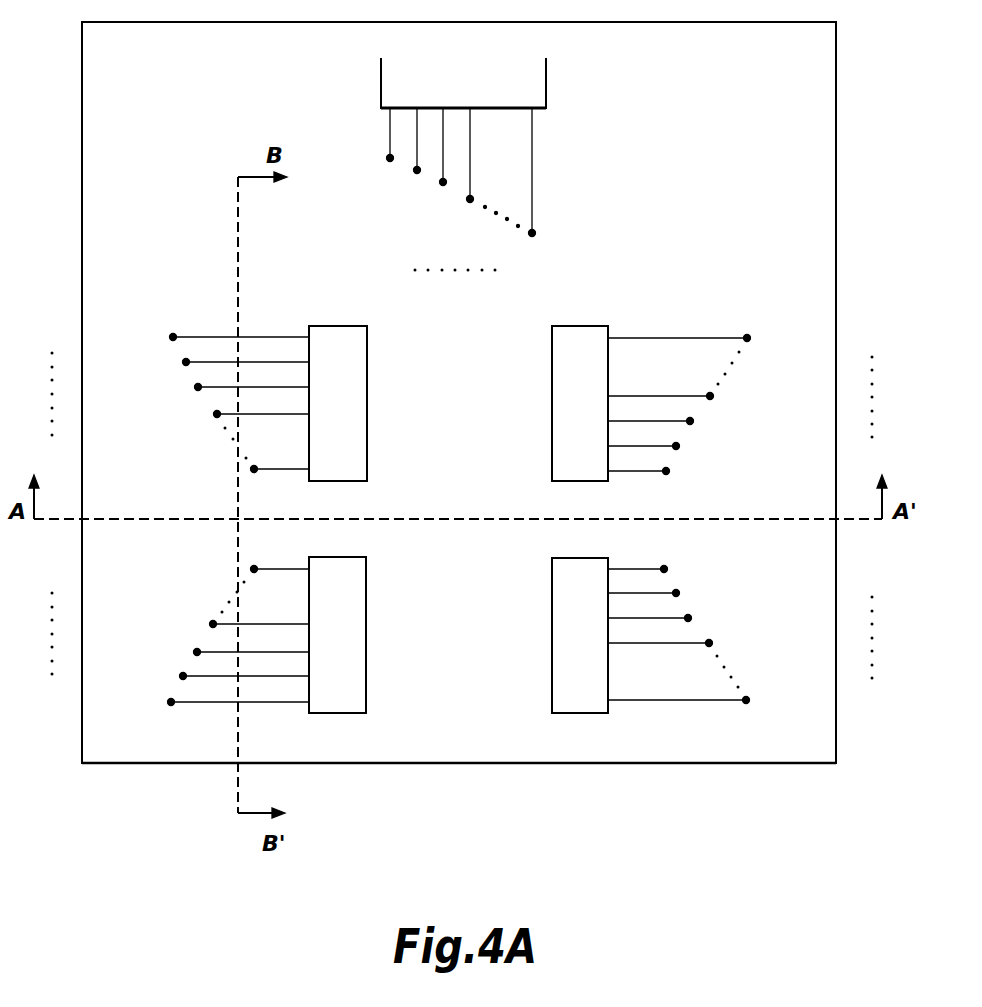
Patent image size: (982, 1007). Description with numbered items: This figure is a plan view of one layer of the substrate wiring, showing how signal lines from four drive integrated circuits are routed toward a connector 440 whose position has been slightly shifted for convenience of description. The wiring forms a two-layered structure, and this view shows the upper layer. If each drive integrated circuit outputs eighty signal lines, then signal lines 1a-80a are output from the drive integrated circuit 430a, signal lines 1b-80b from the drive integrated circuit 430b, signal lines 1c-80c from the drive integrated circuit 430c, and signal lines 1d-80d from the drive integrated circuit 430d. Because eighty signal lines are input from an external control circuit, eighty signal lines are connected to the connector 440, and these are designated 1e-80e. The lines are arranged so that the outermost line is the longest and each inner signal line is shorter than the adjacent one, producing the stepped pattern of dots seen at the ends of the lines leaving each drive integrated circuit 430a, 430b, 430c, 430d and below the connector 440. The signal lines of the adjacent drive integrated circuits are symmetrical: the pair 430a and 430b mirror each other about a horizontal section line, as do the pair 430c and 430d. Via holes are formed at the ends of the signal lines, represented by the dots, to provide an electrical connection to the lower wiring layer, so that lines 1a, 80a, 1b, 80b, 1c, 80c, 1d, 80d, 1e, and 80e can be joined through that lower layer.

The connector 440 is at (546, 84).
The signal line 80e is at (390, 158).
The signal line 1e is at (532, 233).
The drive integrated circuit 430a is at (357, 359).
The drive integrated circuit 430b is at (356, 590).
The drive integrated circuit 430c is at (563, 406).
The drive integrated circuit 430d is at (562, 638).
The signal line 80a is at (173, 337).
The signal line 1a is at (254, 469).
The signal line 1b is at (254, 569).
The signal line 80b is at (171, 702).
The signal line 80c is at (747, 338).
The signal line 1c is at (666, 471).
The signal line 1d is at (664, 569).
The signal line 80d is at (746, 700).